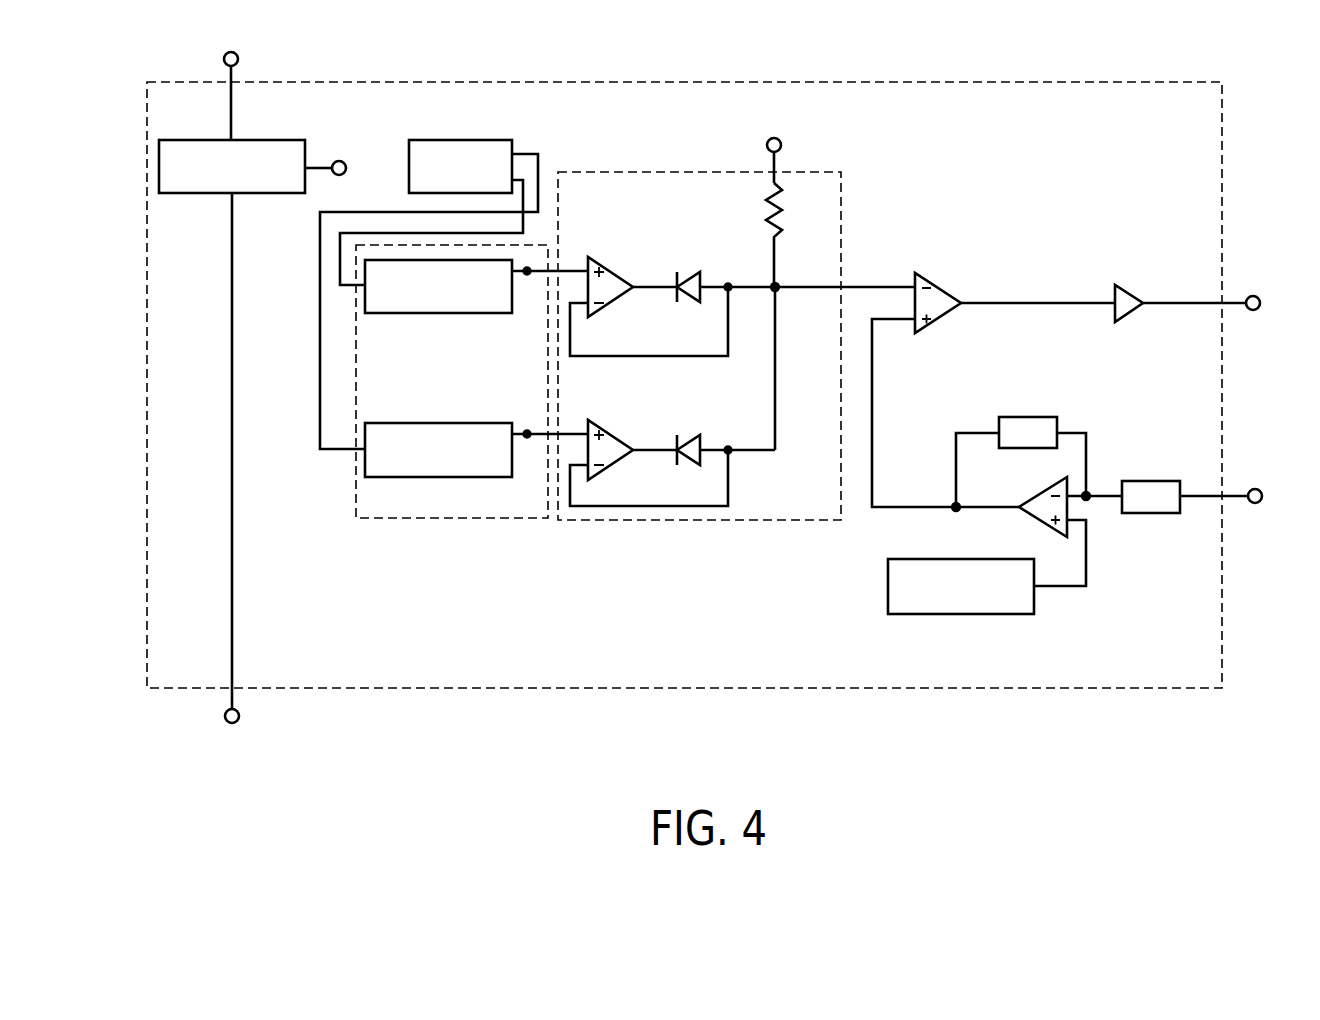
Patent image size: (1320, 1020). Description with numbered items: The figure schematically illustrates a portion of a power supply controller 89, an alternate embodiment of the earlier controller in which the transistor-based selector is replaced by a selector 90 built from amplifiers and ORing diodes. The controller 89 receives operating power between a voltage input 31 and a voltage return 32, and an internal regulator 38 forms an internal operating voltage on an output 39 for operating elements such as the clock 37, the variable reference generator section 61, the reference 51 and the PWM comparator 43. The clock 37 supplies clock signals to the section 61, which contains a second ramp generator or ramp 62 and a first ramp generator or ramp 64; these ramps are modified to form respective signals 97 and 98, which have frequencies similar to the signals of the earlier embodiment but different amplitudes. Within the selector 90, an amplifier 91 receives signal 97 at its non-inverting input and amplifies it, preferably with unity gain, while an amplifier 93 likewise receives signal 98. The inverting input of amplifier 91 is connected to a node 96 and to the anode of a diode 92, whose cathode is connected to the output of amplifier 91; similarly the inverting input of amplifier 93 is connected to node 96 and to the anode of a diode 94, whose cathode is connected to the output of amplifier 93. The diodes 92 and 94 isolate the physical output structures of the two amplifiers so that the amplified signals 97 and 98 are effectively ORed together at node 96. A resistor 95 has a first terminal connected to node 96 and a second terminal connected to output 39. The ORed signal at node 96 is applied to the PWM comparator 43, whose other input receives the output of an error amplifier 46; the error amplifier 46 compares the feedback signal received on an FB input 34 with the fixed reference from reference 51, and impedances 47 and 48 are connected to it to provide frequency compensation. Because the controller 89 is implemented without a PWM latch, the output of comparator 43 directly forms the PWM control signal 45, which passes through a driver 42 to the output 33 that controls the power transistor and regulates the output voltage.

The voltage input 31 is at (238, 55).
The voltage return 32 is at (240, 712).
The output 33 is at (1259, 299).
The FB input 34 is at (1261, 492).
The clock generator 37 is at (473, 142).
The internal regulator 38 is at (255, 140).
The output 39 is at (345, 163).
The driver 42 is at (1133, 292).
The PWM comparator 43 is at (937, 286).
The PWM control signal 45 is at (1032, 302).
The error amplifier 46 is at (1038, 496).
The impedance 47 is at (1152, 514).
The impedance 48 is at (1008, 416).
The fixed reference generator 51 is at (935, 616).
The variable reference generator section 61 is at (425, 520).
The second ramp generator 62 is at (388, 313).
The first ramp generator 64 is at (463, 423).
The power supply controller 89 is at (543, 80).
The selector 90 is at (603, 520).
The amplifier 91 is at (608, 270).
The ORing diode 92 is at (686, 302).
The amplifier 93 is at (610, 466).
The ORing diode 94 is at (688, 435).
The resistor 95 is at (783, 226).
The node 96 is at (785, 290).
The signal 97 is at (527, 278).
The signal 98 is at (526, 430).